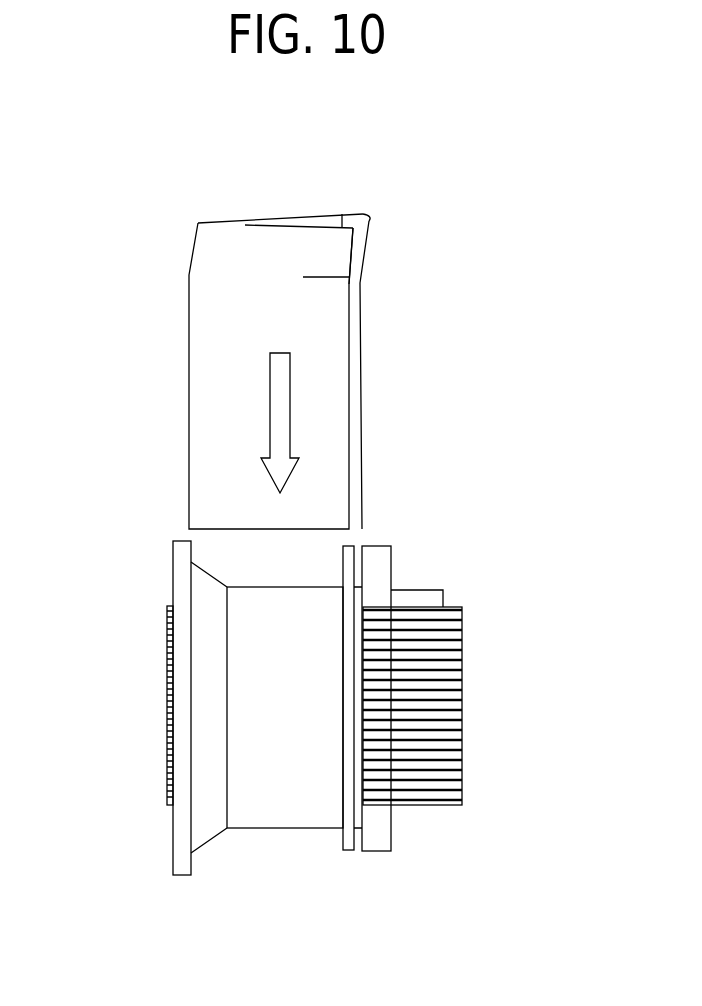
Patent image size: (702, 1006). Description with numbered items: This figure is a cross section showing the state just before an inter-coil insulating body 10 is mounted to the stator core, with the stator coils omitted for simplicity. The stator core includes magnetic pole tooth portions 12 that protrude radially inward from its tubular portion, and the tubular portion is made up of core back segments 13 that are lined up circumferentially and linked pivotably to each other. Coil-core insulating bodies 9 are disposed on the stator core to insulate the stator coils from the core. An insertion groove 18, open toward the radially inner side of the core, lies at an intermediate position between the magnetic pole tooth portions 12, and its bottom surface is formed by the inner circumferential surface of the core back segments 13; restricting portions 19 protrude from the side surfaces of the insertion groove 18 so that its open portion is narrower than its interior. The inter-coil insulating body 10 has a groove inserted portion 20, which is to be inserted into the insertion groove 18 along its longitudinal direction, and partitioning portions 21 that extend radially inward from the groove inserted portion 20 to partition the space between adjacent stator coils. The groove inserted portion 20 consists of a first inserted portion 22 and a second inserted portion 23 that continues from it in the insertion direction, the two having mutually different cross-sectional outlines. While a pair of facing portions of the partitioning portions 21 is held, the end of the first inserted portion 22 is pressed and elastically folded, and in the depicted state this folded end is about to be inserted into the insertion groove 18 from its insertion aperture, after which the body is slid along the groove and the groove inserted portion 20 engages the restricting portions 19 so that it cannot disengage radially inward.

The coil-core insulating body 9 is at (393, 565).
The inter-coil insulating body 10 is at (288, 340).
The magnetic pole tooth portion 12 is at (167, 737).
The core back segment 13 is at (463, 680).
The insertion groove 18 is at (358, 848).
The restricting portion 19 is at (341, 840).
The groove inserted portion 20 is at (362, 485).
The partitioning portion 21 is at (205, 468).
The first inserted portion 22 is at (355, 409).
The second inserted portion 23 is at (357, 248).